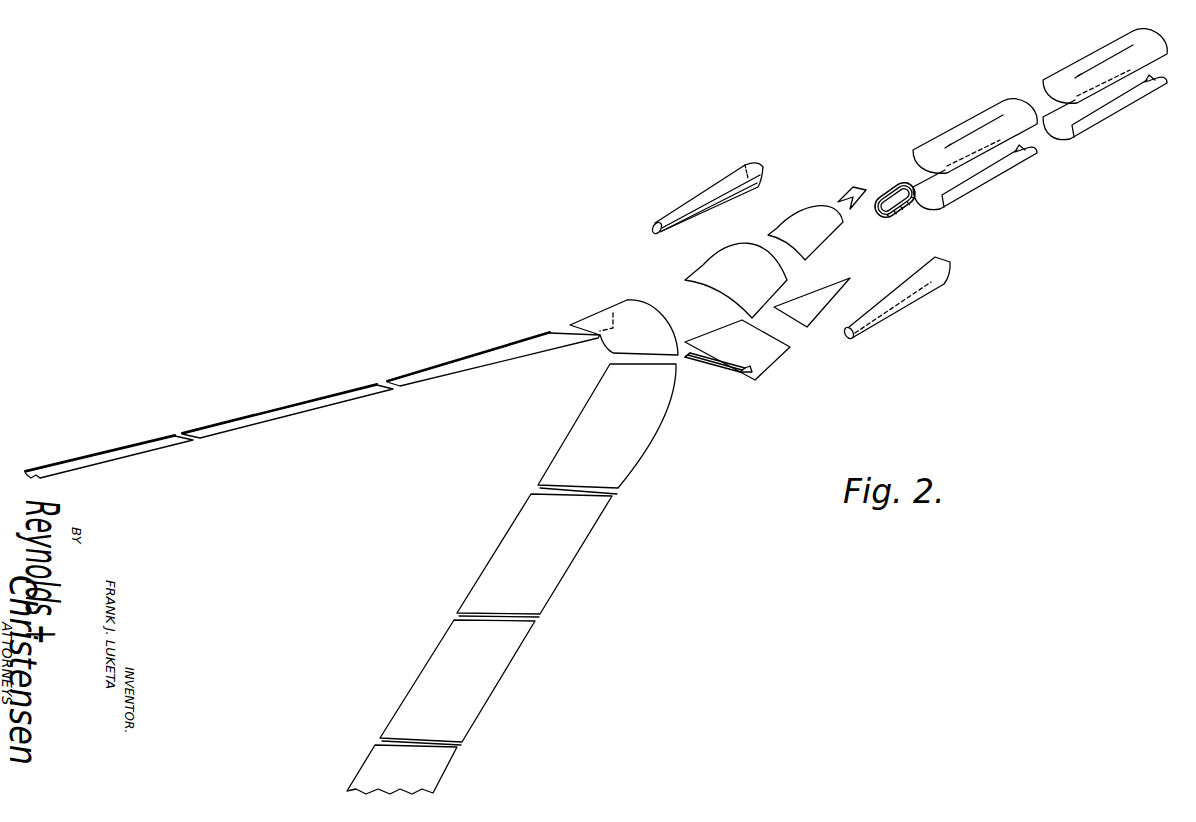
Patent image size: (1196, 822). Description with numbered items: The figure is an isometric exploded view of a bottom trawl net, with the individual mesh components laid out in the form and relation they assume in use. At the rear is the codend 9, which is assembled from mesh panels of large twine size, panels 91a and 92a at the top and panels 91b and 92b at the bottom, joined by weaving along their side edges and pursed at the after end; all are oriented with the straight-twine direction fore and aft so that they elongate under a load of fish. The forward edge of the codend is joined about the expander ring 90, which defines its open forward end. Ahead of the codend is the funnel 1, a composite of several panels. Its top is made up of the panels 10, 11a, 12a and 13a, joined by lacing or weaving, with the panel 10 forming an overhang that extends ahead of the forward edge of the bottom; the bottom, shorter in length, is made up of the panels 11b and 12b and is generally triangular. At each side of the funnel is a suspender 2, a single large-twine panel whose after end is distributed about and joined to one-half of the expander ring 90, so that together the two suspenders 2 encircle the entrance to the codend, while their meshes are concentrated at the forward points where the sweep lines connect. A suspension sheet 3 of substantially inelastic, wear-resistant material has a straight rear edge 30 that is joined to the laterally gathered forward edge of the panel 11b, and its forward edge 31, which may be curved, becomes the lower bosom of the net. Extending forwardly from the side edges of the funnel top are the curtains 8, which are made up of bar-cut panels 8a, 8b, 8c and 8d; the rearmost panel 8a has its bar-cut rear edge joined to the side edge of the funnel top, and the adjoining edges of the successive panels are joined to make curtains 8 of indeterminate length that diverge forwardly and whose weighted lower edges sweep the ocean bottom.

The funnel 1 is at (767, 277).
The suspender 2 is at (702, 193).
The suspension sheet 3 is at (725, 381).
The curtains 8 is at (350, 563).
The curtain panel 8a is at (477, 358).
The curtain panel 8b is at (278, 412).
The curtain panel 8c is at (122, 457).
The band section 8d is at (417, 780).
The codend 9 is at (1039, 117).
The panel 10 is at (648, 338).
The panel 11a is at (759, 279).
The panel 11b is at (753, 353).
The panel 12a is at (821, 239).
The panel 12b is at (813, 314).
The panel 13a is at (857, 192).
The rear edge 30 is at (743, 373).
The forward edge 31 is at (690, 361).
The expander ring 90 is at (903, 214).
The codend panel 91a is at (953, 130).
The codend panel 91b is at (987, 183).
The codend panel 92a is at (1088, 54).
The codend panel 92b is at (1110, 113).